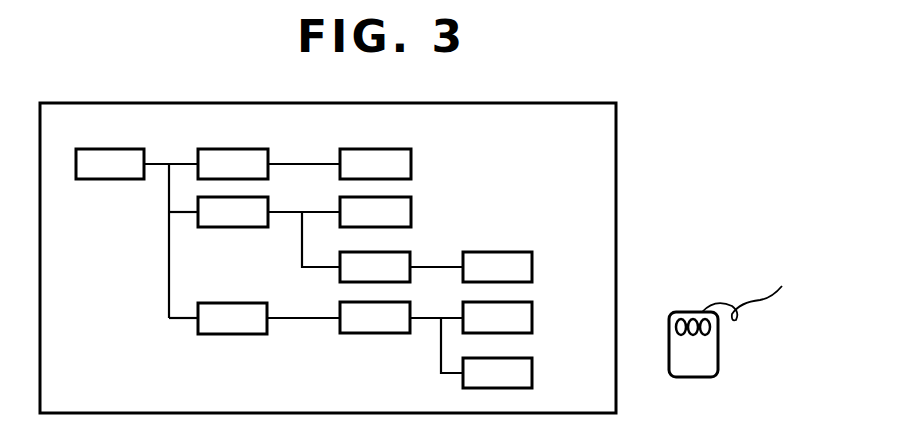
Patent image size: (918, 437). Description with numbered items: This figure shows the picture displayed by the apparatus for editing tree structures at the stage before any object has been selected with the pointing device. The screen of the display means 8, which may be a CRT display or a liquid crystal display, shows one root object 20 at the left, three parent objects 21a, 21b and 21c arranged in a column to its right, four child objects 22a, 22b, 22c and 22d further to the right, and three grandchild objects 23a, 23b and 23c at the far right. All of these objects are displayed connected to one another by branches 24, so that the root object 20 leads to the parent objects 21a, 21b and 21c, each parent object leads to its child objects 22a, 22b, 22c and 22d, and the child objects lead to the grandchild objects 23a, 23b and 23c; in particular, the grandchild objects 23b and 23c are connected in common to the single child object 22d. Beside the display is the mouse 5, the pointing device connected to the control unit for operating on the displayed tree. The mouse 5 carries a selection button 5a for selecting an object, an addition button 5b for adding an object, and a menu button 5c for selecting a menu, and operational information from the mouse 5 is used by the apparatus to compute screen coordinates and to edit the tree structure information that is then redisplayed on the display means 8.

The display means 8 is at (516, 103).
The root object 20 is at (110, 149).
The parent object 21a is at (190, 149).
The parent object 21b is at (228, 227).
The parent object 21c is at (213, 334).
The child object 22a is at (411, 161).
The child object 22b is at (411, 210).
The child object 22c is at (340, 280).
The child object 22d is at (372, 333).
The grandchild object 23a is at (532, 264).
The grandchild object 23b is at (532, 314).
The grandchild object 23c is at (532, 370).
The branches 24 is at (320, 163).
The mouse 5 is at (712, 360).
The selection button 5a is at (680, 318).
The addition button 5b is at (692, 318).
The menu button 5c is at (706, 318).